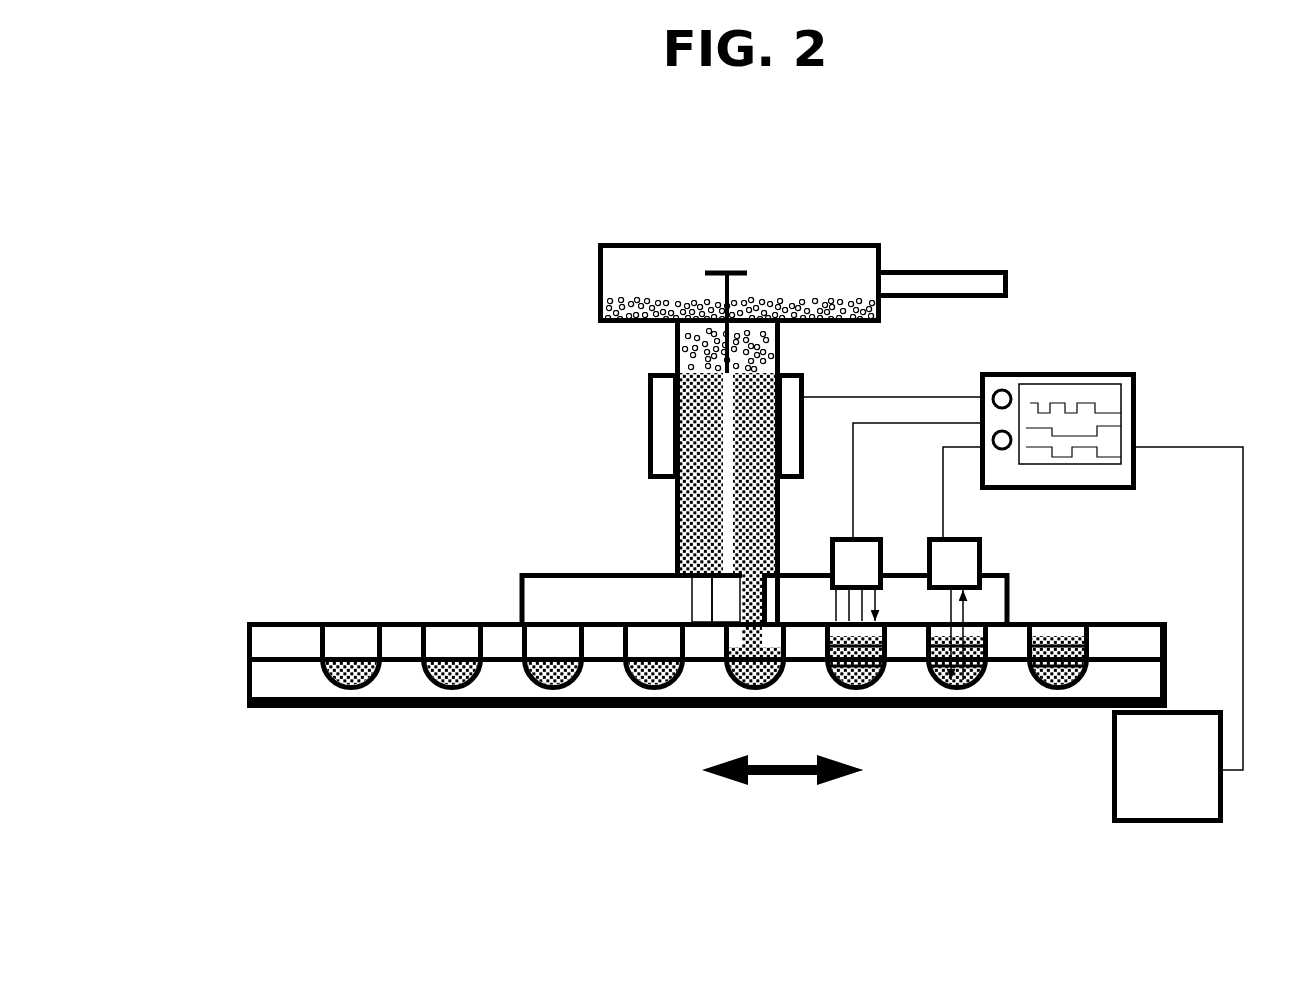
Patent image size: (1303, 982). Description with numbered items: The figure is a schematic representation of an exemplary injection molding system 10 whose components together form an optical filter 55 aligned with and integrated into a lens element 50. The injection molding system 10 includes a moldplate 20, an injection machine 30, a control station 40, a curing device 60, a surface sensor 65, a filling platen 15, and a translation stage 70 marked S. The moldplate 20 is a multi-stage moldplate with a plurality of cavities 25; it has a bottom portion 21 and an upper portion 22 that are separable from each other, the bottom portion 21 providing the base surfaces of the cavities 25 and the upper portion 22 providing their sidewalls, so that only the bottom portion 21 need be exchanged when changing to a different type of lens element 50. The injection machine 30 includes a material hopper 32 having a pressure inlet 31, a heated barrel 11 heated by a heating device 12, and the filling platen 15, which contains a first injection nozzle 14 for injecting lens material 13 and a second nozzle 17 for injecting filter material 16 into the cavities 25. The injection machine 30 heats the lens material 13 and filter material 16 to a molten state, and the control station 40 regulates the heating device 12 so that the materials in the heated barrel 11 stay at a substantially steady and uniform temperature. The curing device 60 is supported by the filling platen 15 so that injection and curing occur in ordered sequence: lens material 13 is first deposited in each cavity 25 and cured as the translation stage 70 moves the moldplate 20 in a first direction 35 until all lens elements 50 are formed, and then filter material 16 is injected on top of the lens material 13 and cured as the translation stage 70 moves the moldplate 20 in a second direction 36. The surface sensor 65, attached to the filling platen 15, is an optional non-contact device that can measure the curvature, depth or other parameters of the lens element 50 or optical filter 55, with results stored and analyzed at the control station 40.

The injection molding system 10 is at (279, 205).
The heated barrel 11 is at (675, 345).
The heating device 12 is at (648, 418).
The lens material 13 is at (700, 485).
The first injection nozzle 14 is at (688, 608).
The filling platen 15 is at (520, 615).
The filter material 16 is at (745, 525).
The second nozzle 17 is at (740, 590).
The moldplate 20 is at (623, 633).
The bottom portion 21 is at (295, 650).
The upper portion 22 is at (295, 685).
The cavities 25 is at (372, 686).
The injection machine 30 is at (651, 227).
The pressure inlet 31 is at (945, 268).
The material hopper 32 is at (755, 265).
The first direction 35 is at (735, 783).
The second direction 36 is at (835, 783).
The control station 40 is at (1105, 372).
The lens element 50 is at (1063, 682).
The optical filter 55 is at (995, 646).
The curing device 60 is at (907, 522).
The surface sensor 65 is at (955, 563).
The translation stage 70 is at (1108, 790).